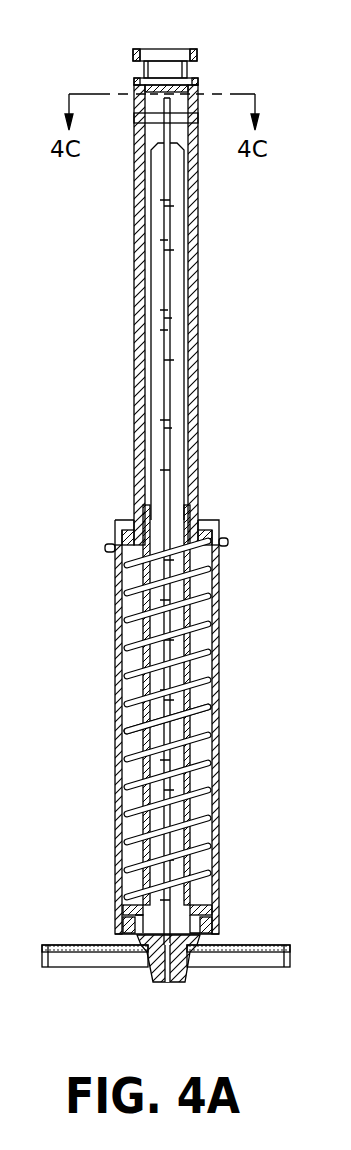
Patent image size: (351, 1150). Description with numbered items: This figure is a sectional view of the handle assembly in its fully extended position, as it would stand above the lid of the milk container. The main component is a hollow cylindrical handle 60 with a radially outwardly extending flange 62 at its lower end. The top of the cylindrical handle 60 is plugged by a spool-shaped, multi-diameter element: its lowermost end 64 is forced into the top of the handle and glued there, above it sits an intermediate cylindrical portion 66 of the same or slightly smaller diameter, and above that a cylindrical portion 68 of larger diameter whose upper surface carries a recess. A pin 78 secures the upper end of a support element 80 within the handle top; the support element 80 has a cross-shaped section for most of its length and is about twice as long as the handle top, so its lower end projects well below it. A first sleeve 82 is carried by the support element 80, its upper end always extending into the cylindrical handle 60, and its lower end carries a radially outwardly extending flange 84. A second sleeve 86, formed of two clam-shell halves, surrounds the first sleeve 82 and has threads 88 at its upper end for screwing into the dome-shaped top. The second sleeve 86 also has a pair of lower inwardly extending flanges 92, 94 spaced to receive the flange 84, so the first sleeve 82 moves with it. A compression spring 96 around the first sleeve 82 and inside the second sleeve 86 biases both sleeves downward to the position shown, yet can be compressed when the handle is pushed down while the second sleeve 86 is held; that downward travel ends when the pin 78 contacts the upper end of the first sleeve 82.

The hollow cylindrical handle 60 is at (198, 315).
The radially outwardly extending flange 62 is at (132, 525).
The lowermost end 64 is at (181, 100).
The intermediate cylindrical portion 66 is at (142, 72).
The cylindrical portion 68 is at (177, 52).
The pin 78 is at (153, 117).
The support element 80 is at (177, 223).
The first sleeve 82 is at (192, 635).
The radially outwardly extending flange 84 is at (213, 922).
The second sleeve 86 is at (215, 782).
The threads 88 is at (108, 548).
The lower inwardly extending flange 92 is at (132, 906).
The lower inwardly extending flange 94 is at (123, 928).
The compression spring 96 is at (207, 718).